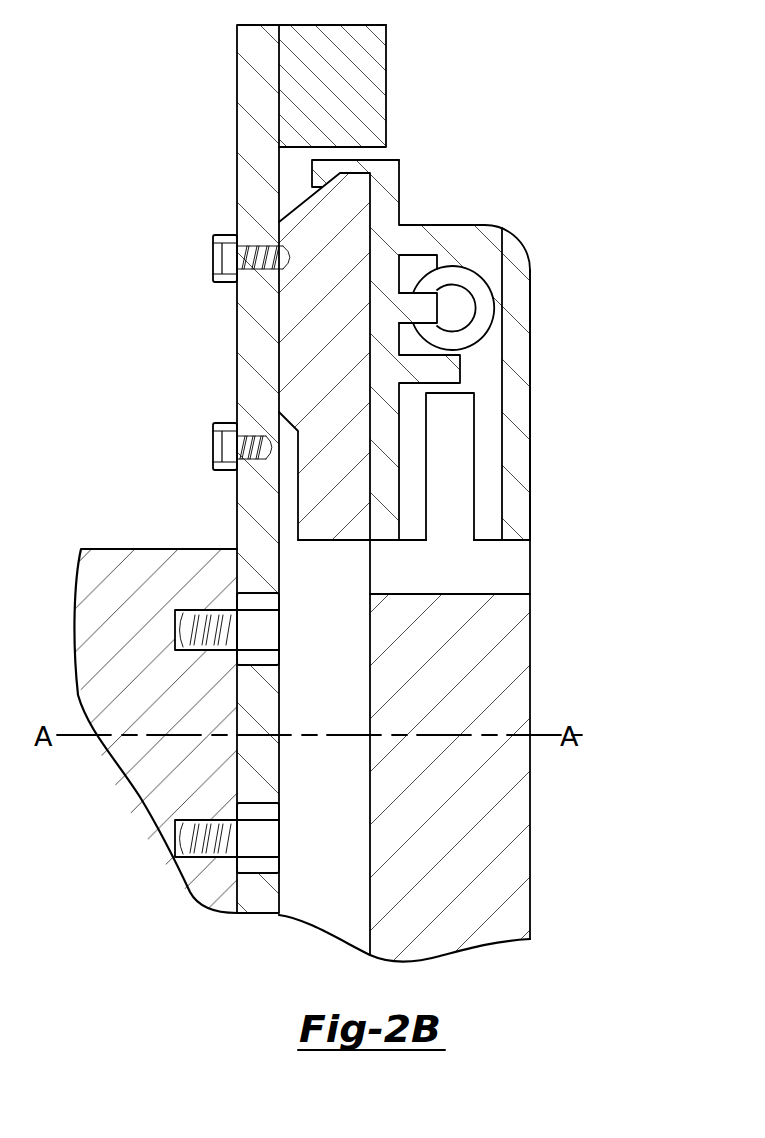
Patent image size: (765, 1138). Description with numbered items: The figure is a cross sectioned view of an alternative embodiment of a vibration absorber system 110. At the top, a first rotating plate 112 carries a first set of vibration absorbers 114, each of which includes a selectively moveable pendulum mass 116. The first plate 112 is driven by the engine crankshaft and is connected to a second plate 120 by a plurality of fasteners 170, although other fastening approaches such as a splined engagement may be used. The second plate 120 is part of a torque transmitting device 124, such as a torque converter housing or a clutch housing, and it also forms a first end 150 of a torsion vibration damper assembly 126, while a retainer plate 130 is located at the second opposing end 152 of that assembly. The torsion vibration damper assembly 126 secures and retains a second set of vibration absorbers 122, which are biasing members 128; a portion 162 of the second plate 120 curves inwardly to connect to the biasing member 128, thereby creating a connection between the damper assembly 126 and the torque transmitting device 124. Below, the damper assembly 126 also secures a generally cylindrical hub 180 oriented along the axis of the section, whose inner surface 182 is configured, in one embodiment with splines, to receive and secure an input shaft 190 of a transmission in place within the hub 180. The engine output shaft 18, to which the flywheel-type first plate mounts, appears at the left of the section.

The output shaft 18 is at (122, 555).
The vibration absorber system 110 is at (484, 70).
The first rotating plate 112 is at (251, 68).
The first set of vibration absorbers 114 is at (408, 16).
The pendulum mass 116 is at (372, 51).
The second plate 120 is at (388, 172).
The second set of vibration absorbers 122 is at (471, 266).
The torque transmitting device 124 is at (300, 346).
The torsion vibration damper assembly 126 is at (545, 310).
The biasing member 128 is at (484, 293).
The retainer plate 130 is at (512, 358).
The first end 150 is at (406, 133).
The second opposing end 152 is at (546, 464).
The portion of the second plate 162 is at (421, 298).
The fasteners 170 is at (213, 258).
The hub 180 is at (505, 565).
The inner surface 182 is at (503, 594).
The input shaft 190 is at (495, 859).